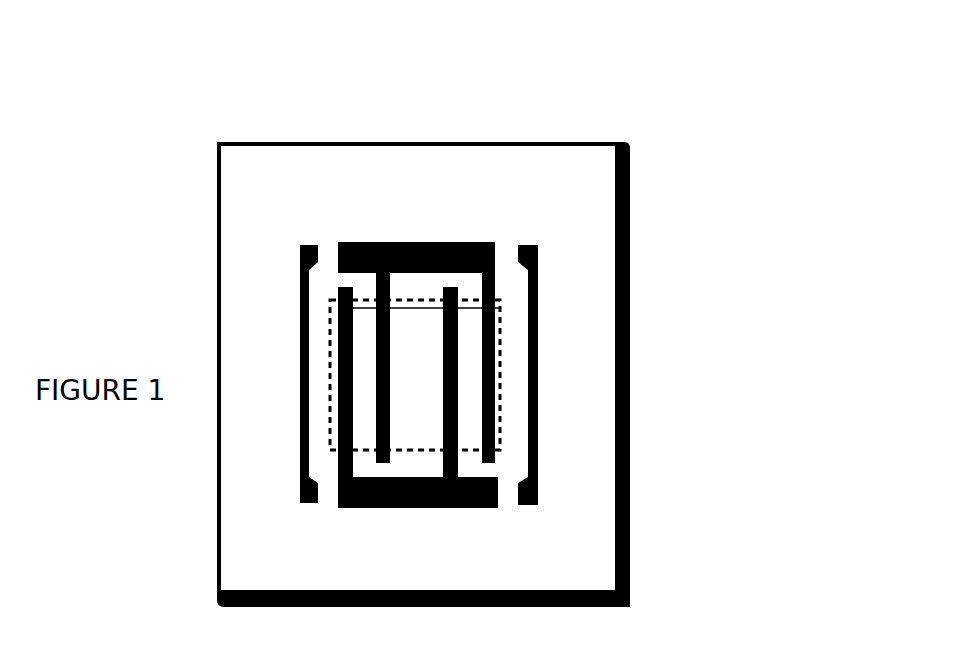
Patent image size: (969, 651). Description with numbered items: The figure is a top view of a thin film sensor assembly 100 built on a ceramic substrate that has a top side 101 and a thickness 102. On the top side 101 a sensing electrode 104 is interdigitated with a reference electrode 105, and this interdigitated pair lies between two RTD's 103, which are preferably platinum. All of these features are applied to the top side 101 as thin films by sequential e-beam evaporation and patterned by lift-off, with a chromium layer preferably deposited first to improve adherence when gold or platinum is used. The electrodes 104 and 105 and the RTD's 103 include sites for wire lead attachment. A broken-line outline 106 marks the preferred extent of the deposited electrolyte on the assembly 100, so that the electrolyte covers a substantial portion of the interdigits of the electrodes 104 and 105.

The thin film sensor assembly 100 is at (686, 201).
The top side 101 is at (568, 144).
The thickness 102 is at (648, 143).
The RTD's 103 is at (555, 460).
The sensing electrode 104 is at (340, 515).
The reference electrode 105 is at (430, 218).
The outline 106 is at (587, 237).